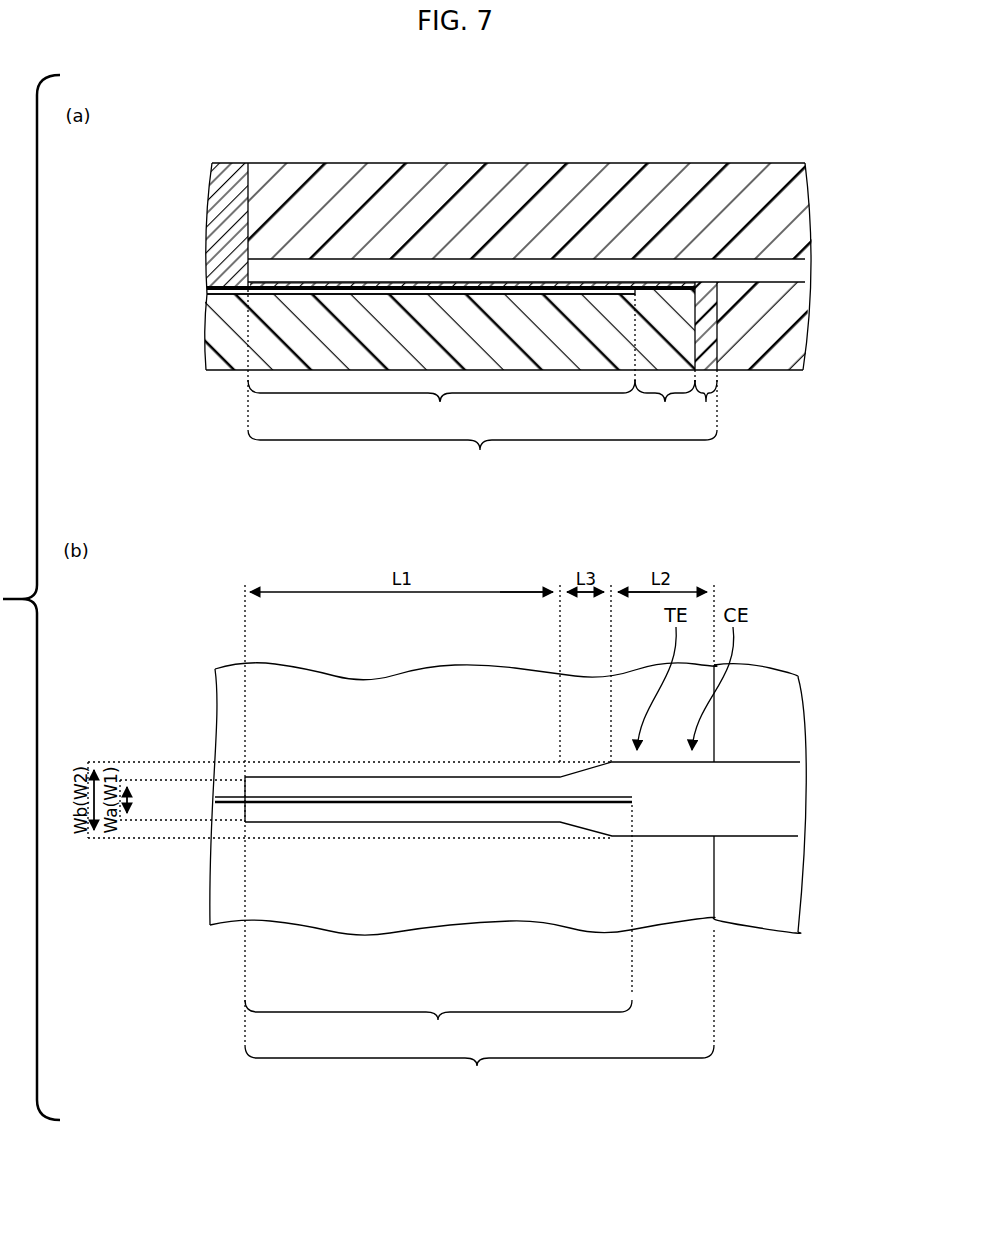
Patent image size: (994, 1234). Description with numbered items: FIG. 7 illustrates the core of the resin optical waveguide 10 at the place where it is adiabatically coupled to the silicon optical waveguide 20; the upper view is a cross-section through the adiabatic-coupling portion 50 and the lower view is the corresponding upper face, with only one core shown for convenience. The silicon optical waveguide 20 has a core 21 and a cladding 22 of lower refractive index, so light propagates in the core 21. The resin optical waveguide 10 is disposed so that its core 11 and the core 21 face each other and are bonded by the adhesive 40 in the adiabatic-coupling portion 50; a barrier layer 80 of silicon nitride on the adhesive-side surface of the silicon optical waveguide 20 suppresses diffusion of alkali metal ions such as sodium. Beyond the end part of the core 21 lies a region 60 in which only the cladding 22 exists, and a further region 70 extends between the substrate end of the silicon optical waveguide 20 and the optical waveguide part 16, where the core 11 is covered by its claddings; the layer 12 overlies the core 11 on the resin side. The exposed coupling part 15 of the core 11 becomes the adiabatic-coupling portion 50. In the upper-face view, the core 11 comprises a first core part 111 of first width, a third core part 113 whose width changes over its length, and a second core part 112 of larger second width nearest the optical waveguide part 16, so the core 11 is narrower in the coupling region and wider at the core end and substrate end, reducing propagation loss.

The resin optical waveguide 10 is at (782, 146).
The core 11 is at (790, 270).
The second layer 12 is at (793, 207).
The coupling part 15 is at (447, 775).
The optical waveguide part 16 is at (765, 762).
The silicon optical waveguide 20 is at (228, 391).
The core 21 is at (222, 296).
The cladding 22 is at (215, 336).
The adhesive 40 is at (298, 284).
The adiabatic-coupling portion 50 is at (440, 665).
The region where only cladding exists 60 is at (665, 359).
The region between silicon optical waveguide and optical waveguide part 70 is at (705, 356).
The barrier layer 80 is at (229, 287).
The first core part 111 is at (403, 815).
The second core part 112 is at (618, 815).
The third core part 113 is at (577, 815).